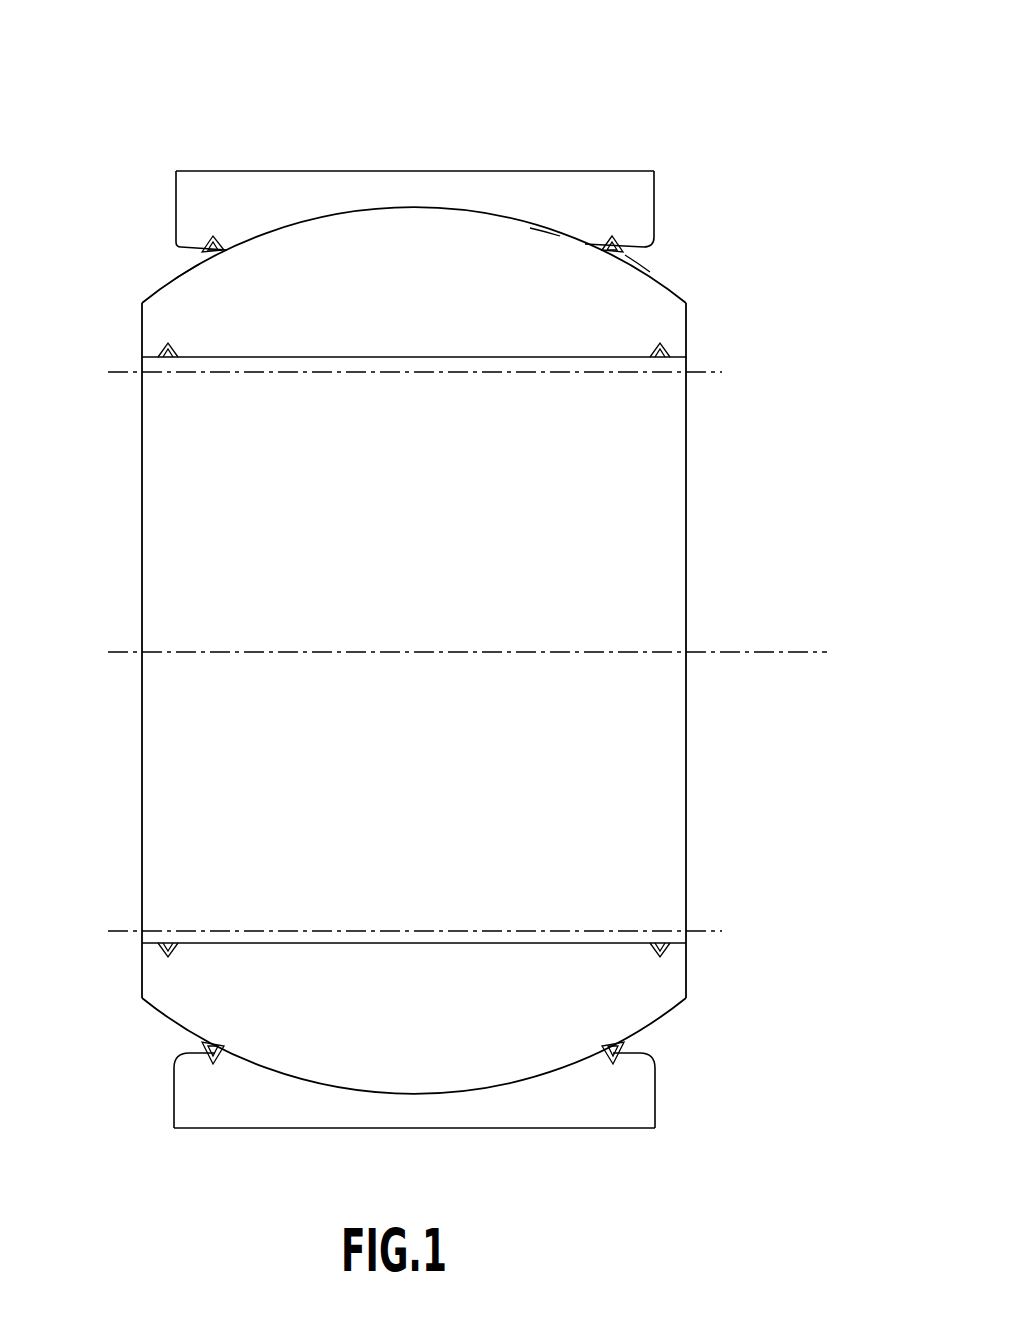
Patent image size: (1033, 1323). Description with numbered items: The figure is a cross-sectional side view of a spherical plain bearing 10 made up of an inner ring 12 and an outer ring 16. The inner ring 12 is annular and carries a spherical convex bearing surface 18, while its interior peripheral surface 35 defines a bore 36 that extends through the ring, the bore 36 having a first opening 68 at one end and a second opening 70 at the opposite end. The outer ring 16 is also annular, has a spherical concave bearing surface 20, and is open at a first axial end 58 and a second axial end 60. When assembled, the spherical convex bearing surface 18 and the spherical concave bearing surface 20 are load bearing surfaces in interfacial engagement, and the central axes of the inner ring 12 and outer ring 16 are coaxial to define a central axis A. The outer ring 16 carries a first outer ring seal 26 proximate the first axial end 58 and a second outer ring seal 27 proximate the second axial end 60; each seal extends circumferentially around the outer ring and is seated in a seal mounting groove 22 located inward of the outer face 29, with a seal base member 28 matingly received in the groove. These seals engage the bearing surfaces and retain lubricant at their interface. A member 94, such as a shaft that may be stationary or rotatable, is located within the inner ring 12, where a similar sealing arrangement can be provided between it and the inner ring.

The spherical plain bearing 10 is at (700, 45).
The inner ring 12 is at (414, 651).
The outer ring 16 is at (424, 641).
The spherical convex bearing surface 18 is at (477, 213).
The spherical concave bearing surface 20 is at (543, 244).
The seal mounting groove 22 is at (210, 238).
The first outer ring seal 26 is at (628, 1040).
The second outer ring seal 27 is at (153, 598).
The seal base member 28 is at (610, 234).
The outer face 29 is at (175, 186).
The interior peripheral surface 35 is at (415, 358).
The bore 36 is at (421, 650).
The first axial end 58 is at (637, 264).
The second axial end 60 is at (185, 259).
The first opening 68 is at (668, 448).
The second opening 70 is at (153, 750).
The member 94 is at (438, 653).
The central axis A is at (803, 652).